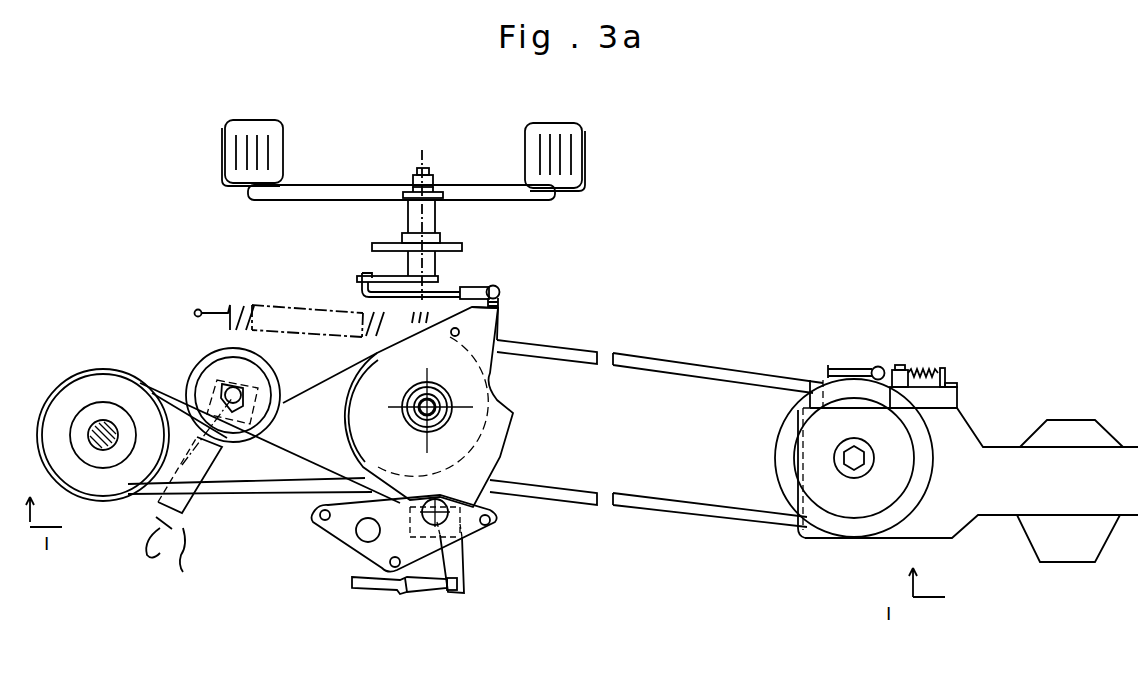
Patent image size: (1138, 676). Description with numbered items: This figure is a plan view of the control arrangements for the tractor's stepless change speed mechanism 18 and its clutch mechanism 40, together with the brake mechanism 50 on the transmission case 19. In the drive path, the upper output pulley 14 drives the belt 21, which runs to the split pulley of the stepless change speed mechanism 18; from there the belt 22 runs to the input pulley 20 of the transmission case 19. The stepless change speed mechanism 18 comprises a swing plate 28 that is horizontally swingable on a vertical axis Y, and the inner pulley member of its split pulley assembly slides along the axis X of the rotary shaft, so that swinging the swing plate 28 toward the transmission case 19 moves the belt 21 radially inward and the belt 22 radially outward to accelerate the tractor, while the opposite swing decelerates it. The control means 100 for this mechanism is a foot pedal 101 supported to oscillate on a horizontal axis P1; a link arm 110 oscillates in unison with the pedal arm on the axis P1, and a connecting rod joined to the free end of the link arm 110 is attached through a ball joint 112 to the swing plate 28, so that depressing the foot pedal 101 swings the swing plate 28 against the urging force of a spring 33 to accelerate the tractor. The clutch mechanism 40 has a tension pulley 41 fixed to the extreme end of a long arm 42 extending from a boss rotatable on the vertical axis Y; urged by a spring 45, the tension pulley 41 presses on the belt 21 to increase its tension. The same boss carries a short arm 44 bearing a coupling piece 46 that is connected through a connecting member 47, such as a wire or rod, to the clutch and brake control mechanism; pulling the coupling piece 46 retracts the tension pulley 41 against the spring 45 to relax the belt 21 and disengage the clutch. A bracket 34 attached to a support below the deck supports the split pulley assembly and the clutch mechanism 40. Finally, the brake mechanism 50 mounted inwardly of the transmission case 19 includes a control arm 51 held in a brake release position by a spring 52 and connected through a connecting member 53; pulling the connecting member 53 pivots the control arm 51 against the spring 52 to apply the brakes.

The foot pedal 101 is at (278, 138).
The control means 100 is at (491, 213).
The horizontal axis P1 is at (425, 213).
The link arm 110 is at (380, 273).
The ball joint 112 is at (499, 292).
The spring 33 is at (255, 305).
The upper output pulley 14 is at (86, 374).
The clutch mechanism 40 is at (264, 450).
The tension pulley 41 is at (280, 370).
The long arm 42 is at (296, 440).
The spring 45 is at (182, 572).
The belt 21 is at (262, 493).
The stepless change speed mechanism 18 is at (475, 407).
The axis X is at (440, 395).
The swing plate 28 is at (490, 323).
The bracket 34 is at (335, 537).
The vertical axis Y is at (462, 522).
The short arm 44 is at (470, 580).
The coupling piece 46 is at (430, 595).
The connecting member 47 is at (357, 596).
The belt 22 is at (713, 515).
The transmission case 19 is at (958, 520).
The input pulley 20 is at (777, 448).
The brake mechanism 50 is at (893, 333).
The control arm 51 is at (878, 366).
The spring 52 is at (912, 352).
The connecting member 53 is at (842, 367).